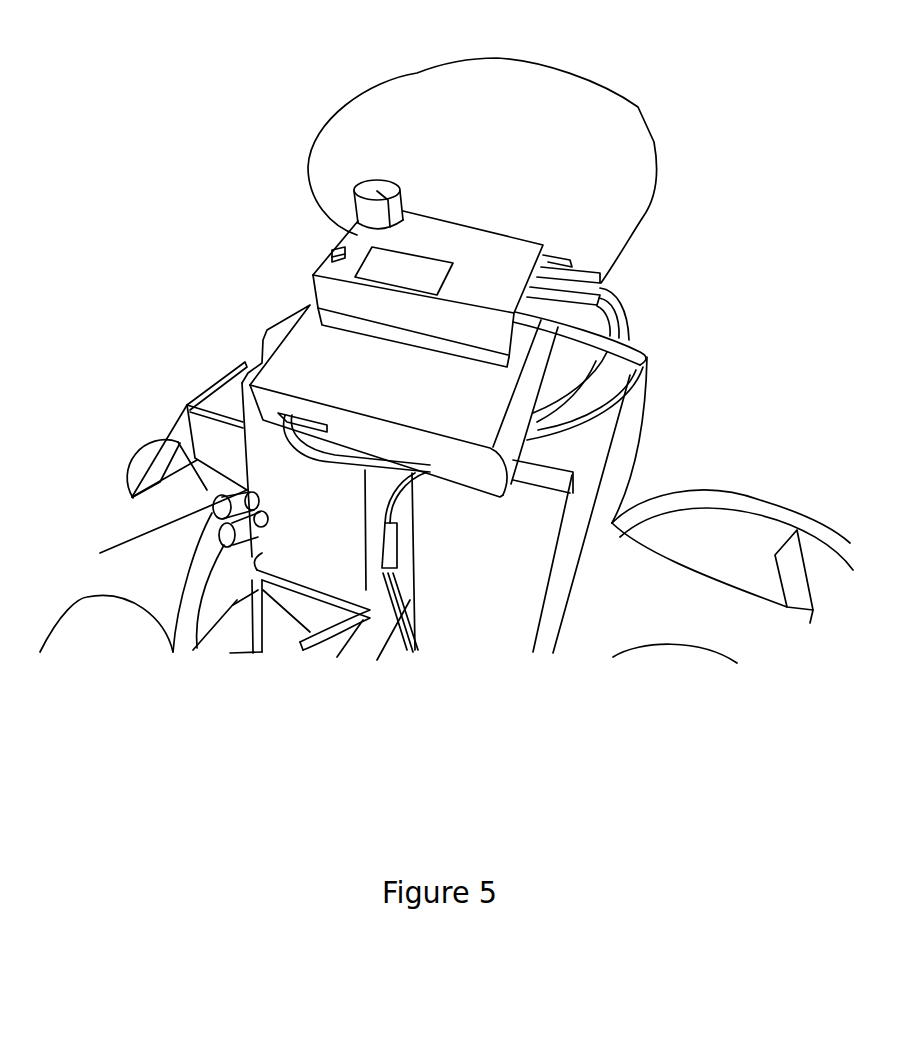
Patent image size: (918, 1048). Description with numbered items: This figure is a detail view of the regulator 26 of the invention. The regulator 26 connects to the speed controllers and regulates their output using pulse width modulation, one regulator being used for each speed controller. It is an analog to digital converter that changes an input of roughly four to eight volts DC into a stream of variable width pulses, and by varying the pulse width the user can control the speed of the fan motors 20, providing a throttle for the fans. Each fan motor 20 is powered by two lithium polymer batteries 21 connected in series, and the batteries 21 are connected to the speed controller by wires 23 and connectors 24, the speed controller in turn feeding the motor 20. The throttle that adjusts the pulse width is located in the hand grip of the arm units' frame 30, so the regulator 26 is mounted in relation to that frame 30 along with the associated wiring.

The fan motor 20 is at (158, 472).
The lithium polymer battery 21 is at (215, 413).
The wires 23 is at (180, 608).
The connectors 24 is at (210, 512).
The regulator 26 is at (355, 235).
The frame 30 is at (393, 127).